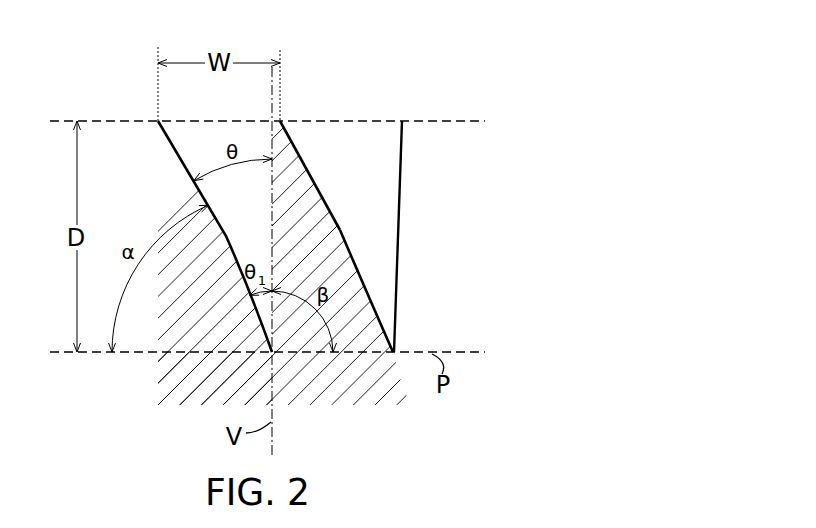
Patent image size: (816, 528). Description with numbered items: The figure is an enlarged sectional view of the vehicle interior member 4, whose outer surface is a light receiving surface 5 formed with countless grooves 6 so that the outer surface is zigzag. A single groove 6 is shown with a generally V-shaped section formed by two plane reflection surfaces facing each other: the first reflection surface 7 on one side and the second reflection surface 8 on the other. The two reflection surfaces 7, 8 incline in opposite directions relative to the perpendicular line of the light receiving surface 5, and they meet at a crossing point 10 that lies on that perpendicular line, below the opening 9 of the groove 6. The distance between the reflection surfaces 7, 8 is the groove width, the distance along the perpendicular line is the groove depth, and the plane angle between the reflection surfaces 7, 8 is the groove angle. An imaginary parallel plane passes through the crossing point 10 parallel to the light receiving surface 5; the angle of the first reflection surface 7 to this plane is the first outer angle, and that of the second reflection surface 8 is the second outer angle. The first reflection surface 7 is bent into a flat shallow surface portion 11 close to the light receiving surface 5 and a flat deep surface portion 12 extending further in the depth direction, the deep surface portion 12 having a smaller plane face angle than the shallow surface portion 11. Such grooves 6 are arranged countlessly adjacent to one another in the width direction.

The vehicle interior member 4 is at (177, 370).
The light receiving surface 5 is at (440, 121).
The groove 6 is at (142, 103).
The first reflection surface 7 is at (384, 236).
The second reflection surface 8 is at (398, 154).
The opening 9 is at (335, 150).
The crossing point 10 is at (394, 354).
The shallow surface portion 11 is at (325, 192).
The deep surface portion 12 is at (395, 291).